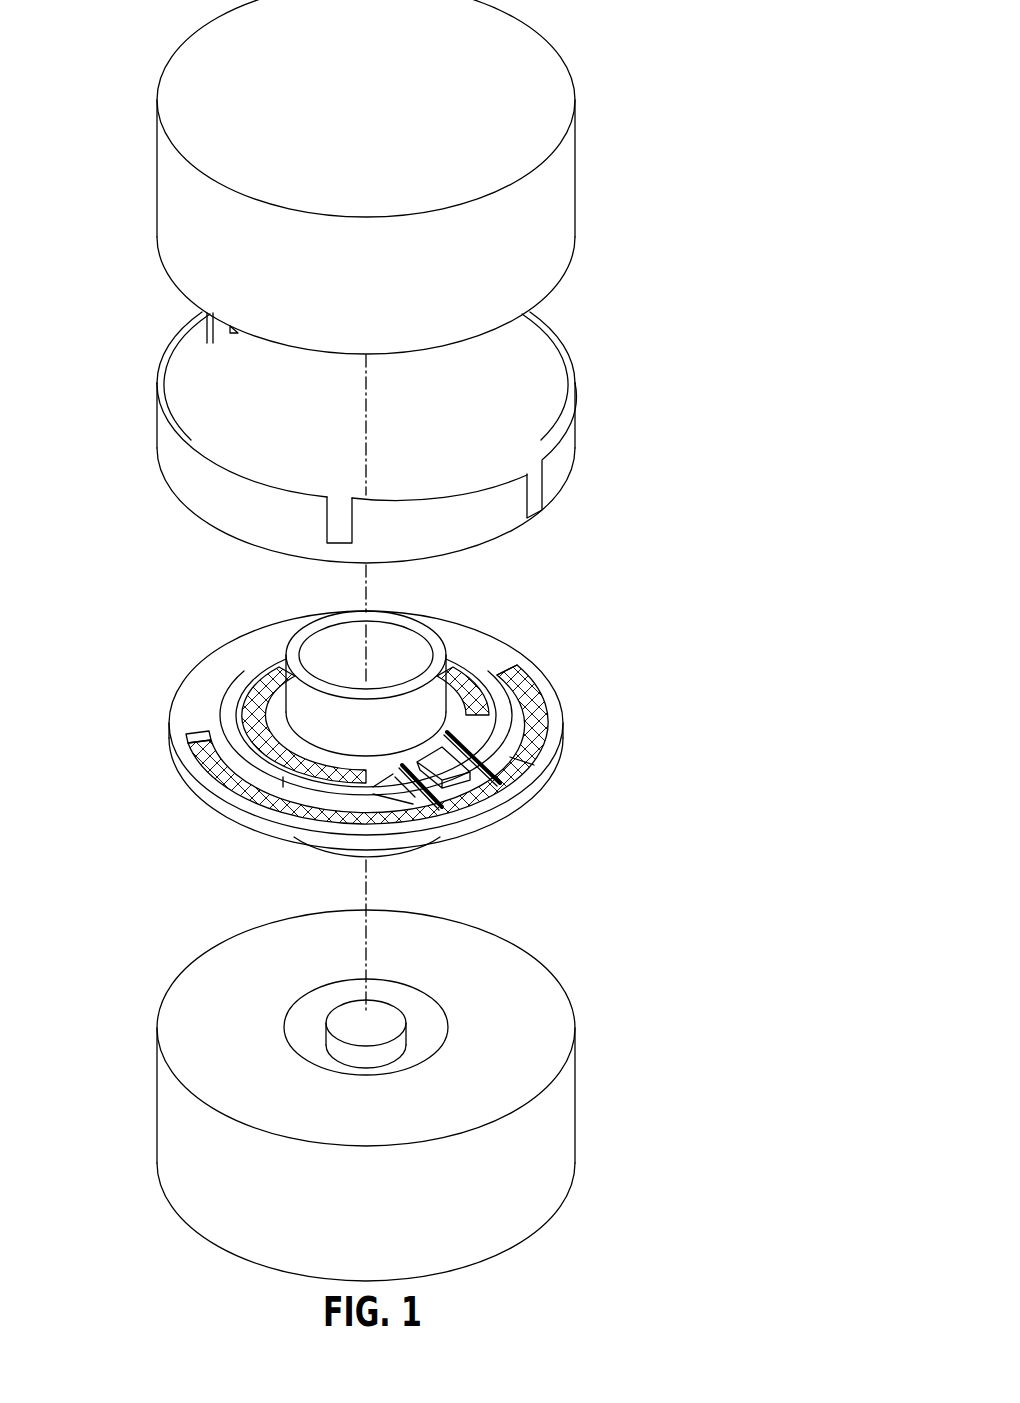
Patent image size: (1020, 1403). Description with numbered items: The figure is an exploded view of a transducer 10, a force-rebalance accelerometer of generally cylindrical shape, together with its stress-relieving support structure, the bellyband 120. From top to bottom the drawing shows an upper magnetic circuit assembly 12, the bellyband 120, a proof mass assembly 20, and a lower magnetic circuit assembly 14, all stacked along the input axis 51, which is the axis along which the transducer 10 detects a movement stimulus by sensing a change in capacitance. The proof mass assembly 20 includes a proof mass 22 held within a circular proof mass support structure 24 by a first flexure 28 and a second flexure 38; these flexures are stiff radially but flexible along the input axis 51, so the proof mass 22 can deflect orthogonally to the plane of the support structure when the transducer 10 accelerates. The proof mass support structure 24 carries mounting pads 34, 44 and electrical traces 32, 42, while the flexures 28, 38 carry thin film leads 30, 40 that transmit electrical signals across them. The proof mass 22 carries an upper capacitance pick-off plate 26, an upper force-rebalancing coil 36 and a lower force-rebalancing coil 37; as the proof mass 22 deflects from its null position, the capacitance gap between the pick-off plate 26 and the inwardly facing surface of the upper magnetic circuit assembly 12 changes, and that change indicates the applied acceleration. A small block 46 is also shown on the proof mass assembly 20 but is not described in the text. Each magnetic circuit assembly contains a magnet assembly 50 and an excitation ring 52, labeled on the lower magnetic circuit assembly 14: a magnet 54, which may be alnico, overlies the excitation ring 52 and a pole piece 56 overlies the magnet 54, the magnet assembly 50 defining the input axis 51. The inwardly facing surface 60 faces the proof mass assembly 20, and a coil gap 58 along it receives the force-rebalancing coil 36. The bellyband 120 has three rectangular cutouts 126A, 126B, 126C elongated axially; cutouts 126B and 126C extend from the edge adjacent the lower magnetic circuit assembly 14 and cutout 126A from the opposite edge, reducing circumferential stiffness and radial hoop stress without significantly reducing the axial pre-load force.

The transducer 10 is at (788, 53).
The upper magnetic circuit assembly 12 is at (624, 153).
The lower magnetic circuit assembly 14 is at (620, 1151).
The proof mass assembly 20 is at (524, 597).
The proof mass 22 is at (480, 690).
The proof mass support structure 24 is at (268, 633).
The upper capacitance pick-off plate 26 is at (248, 710).
The first flexure 28 is at (467, 745).
The thin film lead 30 is at (497, 757).
The electrical trace 32 is at (527, 765).
The mounting pad 34 is at (522, 667).
The upper force-rebalancing coil 36 is at (405, 627).
The lower force-rebalancing coil 37 is at (323, 853).
The second flexure 38 is at (407, 783).
The thin film lead 40 is at (437, 793).
The electrical trace 42 is at (205, 760).
The mounting pad 44 is at (190, 735).
The key block 46 is at (402, 765).
The magnet assembly 50 is at (405, 972).
The input axis 51 is at (362, 887).
The excitation ring 52 is at (537, 998).
The magnet 54 is at (443, 1043).
The pole piece 56 is at (387, 1037).
The coil gap 58 is at (430, 1027).
The inwardly facing surface 60 is at (208, 993).
The bellyband 120 is at (577, 367).
The cutout 126A is at (338, 508).
The cutout 126B is at (207, 343).
The cutout 126C is at (537, 492).